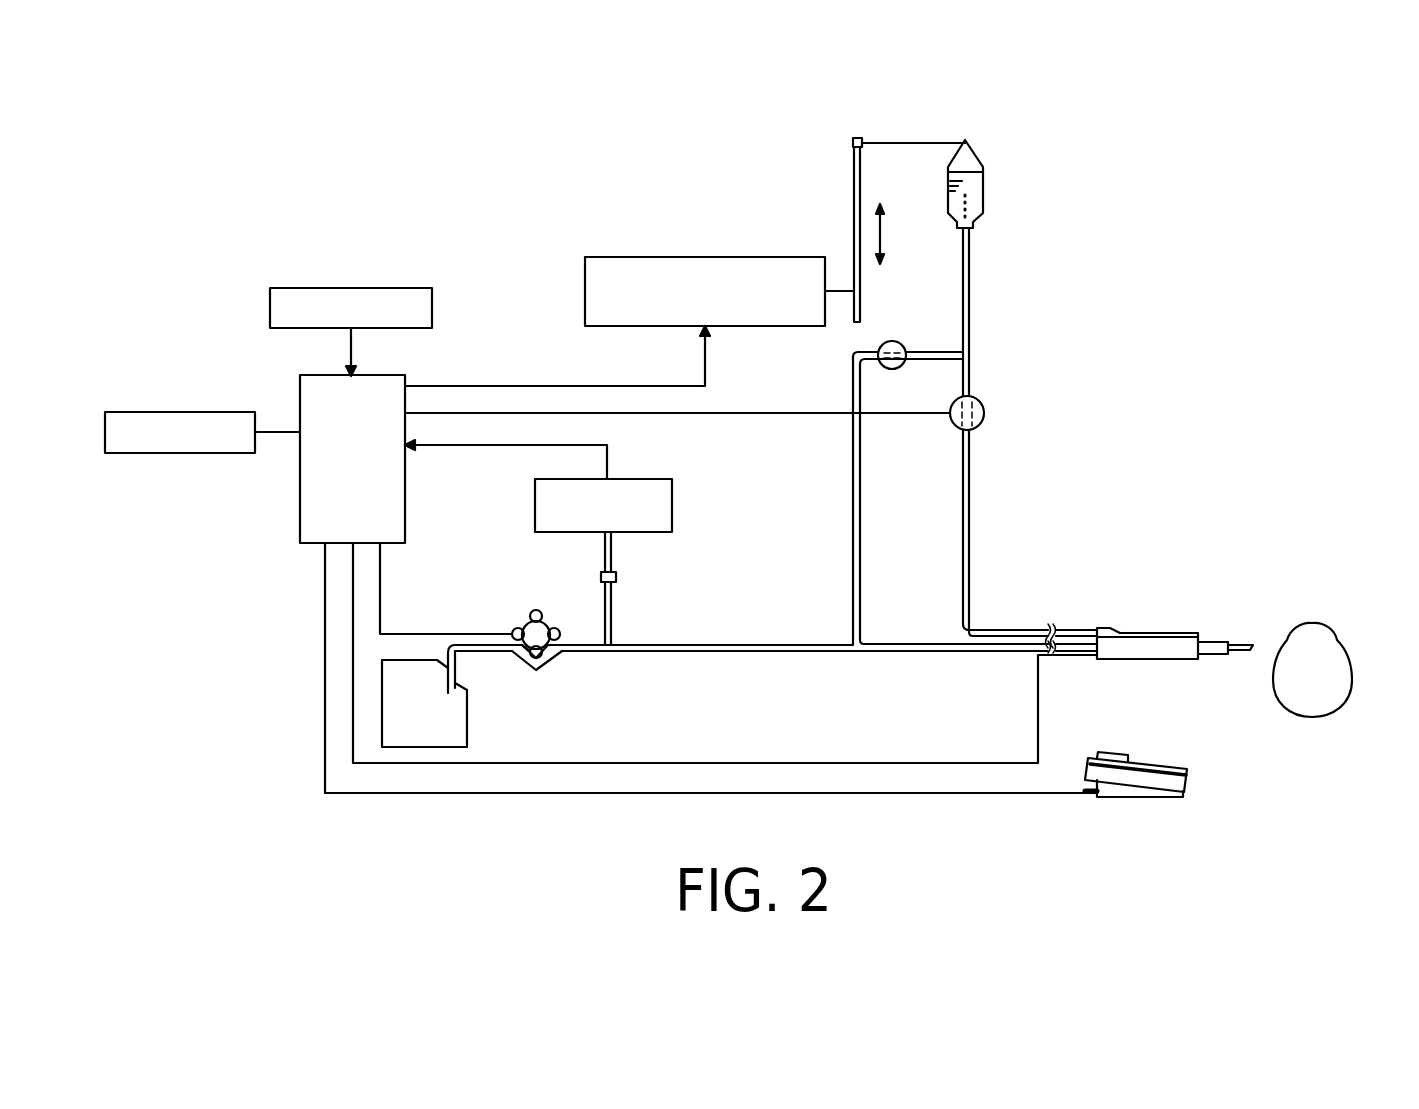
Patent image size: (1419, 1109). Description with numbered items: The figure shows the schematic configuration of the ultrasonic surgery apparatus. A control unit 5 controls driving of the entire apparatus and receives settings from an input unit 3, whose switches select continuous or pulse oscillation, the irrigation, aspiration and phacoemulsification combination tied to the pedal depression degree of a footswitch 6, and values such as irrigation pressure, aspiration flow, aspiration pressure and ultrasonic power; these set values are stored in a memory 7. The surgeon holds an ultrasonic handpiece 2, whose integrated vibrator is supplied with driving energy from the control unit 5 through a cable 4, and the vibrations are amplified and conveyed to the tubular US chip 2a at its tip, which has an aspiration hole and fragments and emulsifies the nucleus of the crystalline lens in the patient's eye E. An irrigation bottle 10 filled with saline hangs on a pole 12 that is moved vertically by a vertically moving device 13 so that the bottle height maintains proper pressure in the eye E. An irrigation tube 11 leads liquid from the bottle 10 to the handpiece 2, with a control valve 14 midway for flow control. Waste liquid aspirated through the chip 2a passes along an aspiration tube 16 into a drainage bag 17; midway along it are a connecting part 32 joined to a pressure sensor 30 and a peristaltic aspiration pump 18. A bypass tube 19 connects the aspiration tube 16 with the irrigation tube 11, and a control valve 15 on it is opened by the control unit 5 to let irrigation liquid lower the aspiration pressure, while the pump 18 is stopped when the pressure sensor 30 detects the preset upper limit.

The ultrasonic handpiece 2 is at (1172, 647).
The US chip 2a is at (1237, 643).
The input unit 3 is at (270, 307).
The cable 4 is at (770, 762).
The control unit 5 is at (310, 532).
The footswitch 6 is at (1150, 797).
The memory 7 is at (175, 412).
The irrigation bottle 10 is at (985, 197).
The irrigation tube 11 is at (972, 302).
The pole 12 is at (855, 218).
The vertically moving device 13 is at (585, 293).
The control valve 14 is at (983, 403).
The control valve 15 is at (896, 341).
The aspiration tube 16 is at (740, 644).
The drainage bag 17 is at (450, 718).
The peristaltic aspiration pump 18 is at (514, 608).
The bypass tube 19 is at (862, 583).
The pressure sensor 30 is at (655, 478).
The connecting part 32 is at (618, 580).
The patient's eye E is at (1340, 677).